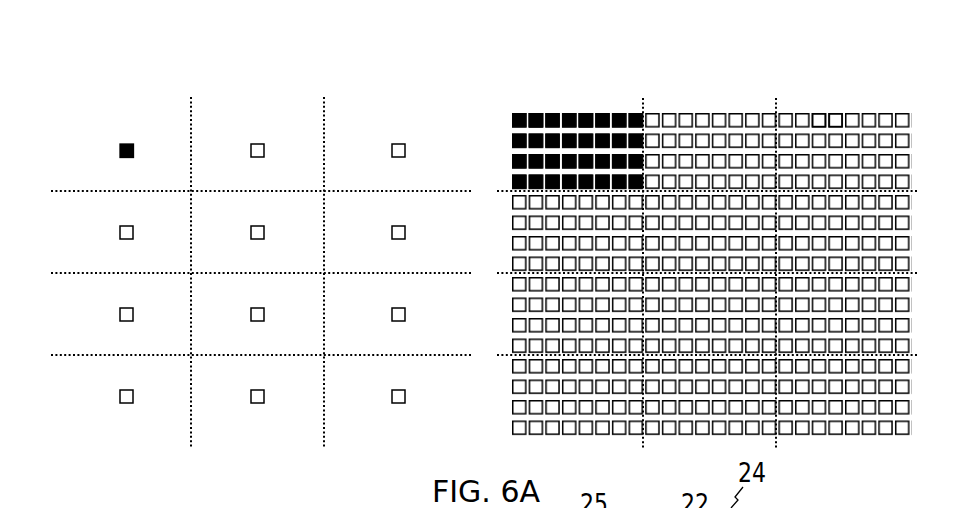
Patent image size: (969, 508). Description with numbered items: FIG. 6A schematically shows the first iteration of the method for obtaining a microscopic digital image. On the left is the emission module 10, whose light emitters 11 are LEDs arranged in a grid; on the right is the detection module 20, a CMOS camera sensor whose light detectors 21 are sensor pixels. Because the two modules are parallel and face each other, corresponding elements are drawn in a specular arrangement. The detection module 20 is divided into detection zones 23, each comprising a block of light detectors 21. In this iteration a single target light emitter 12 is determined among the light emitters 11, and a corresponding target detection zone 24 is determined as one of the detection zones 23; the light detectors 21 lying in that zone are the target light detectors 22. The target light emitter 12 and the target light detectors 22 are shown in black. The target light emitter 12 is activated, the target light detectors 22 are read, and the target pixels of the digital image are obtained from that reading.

The emission module 10 is at (75, 106).
The light emitter 11 is at (257, 144).
The target light emitter 12 is at (126, 143).
The detection module 20 is at (871, 76).
The light detector 21 is at (818, 110).
The target light detector 22 is at (533, 112).
The detection zone 23 is at (834, 110).
The target detection zone 24 is at (628, 94).